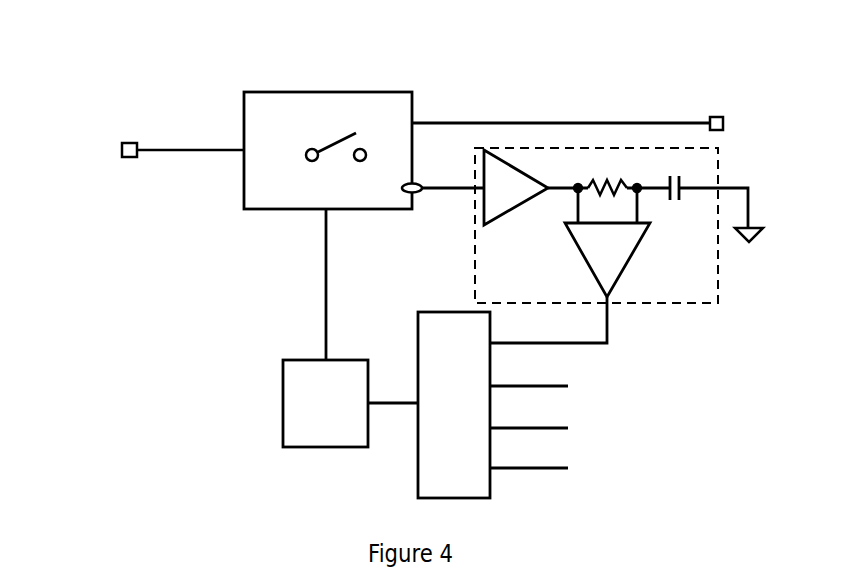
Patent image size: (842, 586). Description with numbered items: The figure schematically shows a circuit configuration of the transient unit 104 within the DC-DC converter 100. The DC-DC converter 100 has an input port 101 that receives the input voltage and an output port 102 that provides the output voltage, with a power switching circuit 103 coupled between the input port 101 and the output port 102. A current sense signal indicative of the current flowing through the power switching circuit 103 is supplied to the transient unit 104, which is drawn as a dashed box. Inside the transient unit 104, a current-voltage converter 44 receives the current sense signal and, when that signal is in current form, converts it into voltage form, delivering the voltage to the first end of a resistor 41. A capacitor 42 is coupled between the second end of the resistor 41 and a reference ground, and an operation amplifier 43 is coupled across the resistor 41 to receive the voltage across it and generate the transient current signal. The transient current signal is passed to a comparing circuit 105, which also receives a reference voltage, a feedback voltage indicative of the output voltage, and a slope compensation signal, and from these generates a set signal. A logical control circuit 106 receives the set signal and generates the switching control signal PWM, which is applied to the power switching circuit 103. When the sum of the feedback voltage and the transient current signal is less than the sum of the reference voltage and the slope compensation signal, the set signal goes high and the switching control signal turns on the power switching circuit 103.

The DC-DC converter 100 is at (136, 78).
The input port 101 is at (132, 163).
The output port 102 is at (716, 116).
The power switching circuit 103 is at (296, 127).
The transient unit 104 is at (701, 295).
The comparing circuit 105 is at (454, 405).
The logical control circuit 106 is at (325, 403).
The resistor 41 is at (607, 175).
The capacitor 42 is at (687, 203).
The operation amplifier 43 is at (607, 242).
The current-voltage converter 44 is at (516, 187).